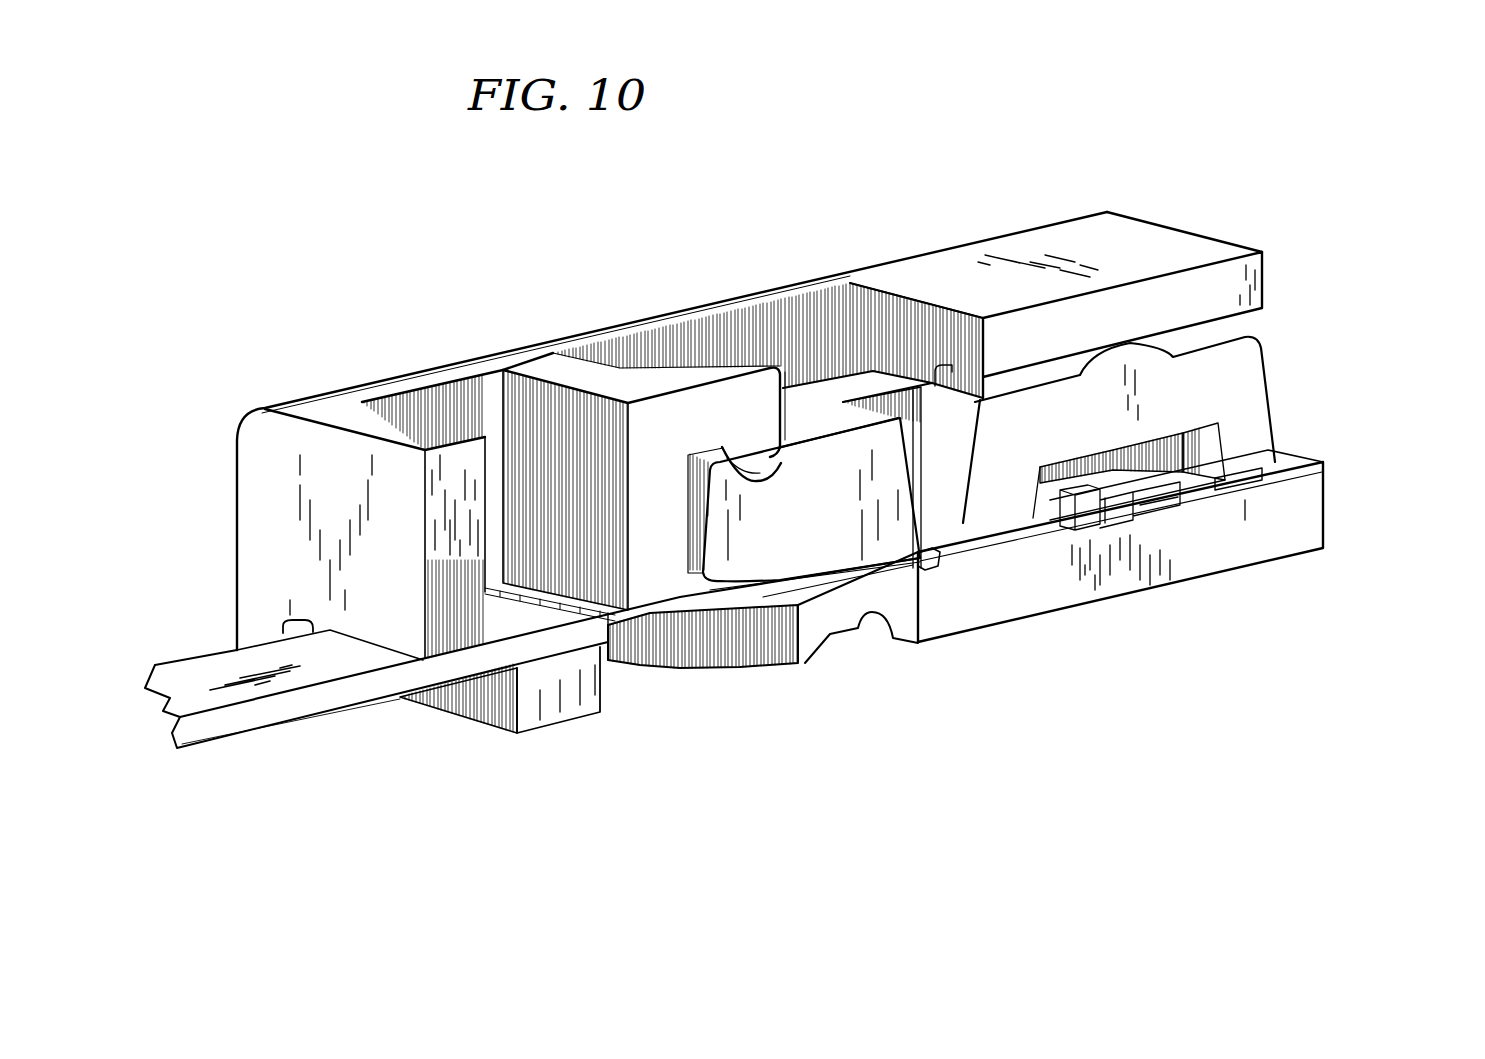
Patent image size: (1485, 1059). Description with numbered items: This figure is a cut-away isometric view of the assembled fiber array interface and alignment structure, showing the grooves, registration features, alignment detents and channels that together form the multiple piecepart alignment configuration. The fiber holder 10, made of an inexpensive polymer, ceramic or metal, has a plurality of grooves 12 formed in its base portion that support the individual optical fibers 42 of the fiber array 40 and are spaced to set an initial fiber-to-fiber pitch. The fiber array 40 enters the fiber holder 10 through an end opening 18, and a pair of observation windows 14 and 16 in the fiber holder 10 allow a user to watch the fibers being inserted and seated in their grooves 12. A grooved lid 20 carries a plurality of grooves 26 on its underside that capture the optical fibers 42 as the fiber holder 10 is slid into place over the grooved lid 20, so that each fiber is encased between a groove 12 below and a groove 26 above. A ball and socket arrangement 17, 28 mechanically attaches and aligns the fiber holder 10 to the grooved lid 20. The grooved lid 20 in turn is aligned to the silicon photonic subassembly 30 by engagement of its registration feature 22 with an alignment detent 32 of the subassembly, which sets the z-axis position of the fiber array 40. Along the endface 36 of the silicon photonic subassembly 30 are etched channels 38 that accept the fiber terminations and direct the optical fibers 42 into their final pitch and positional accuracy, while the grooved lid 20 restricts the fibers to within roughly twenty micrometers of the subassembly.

The fiber holder 10 is at (532, 362).
The grooves 12 is at (815, 590).
The observation window 14 is at (426, 400).
The observation window 16 is at (630, 348).
The ball of ball and socket arrangement 17 is at (753, 442).
The end opening 18 is at (283, 632).
The grooved lid 20 is at (811, 421).
The registration feature 22 is at (1250, 480).
The grooves 26 is at (770, 583).
The socket of ball and socket arrangement 28 is at (760, 478).
The silicon photonic subassembly 30 is at (1304, 528).
The alignment detent 32 is at (1265, 478).
The endface 36 is at (906, 640).
The channels 38 is at (930, 558).
The fiber array 40 is at (183, 672).
The optical fibers 42 is at (655, 615).